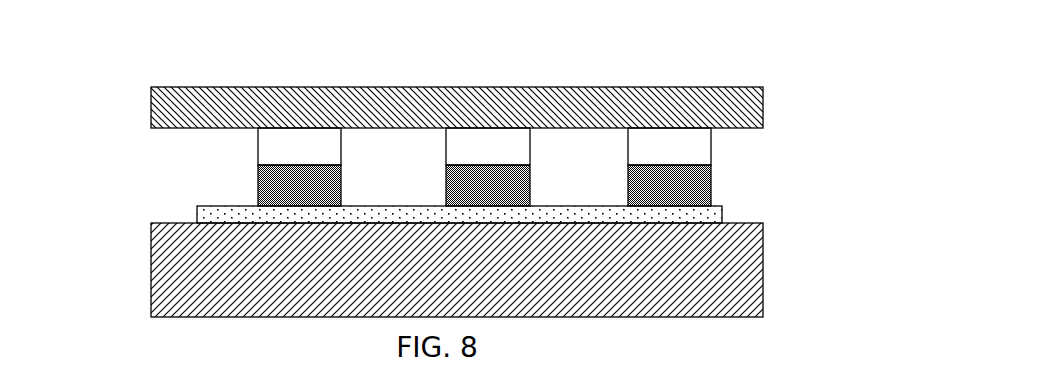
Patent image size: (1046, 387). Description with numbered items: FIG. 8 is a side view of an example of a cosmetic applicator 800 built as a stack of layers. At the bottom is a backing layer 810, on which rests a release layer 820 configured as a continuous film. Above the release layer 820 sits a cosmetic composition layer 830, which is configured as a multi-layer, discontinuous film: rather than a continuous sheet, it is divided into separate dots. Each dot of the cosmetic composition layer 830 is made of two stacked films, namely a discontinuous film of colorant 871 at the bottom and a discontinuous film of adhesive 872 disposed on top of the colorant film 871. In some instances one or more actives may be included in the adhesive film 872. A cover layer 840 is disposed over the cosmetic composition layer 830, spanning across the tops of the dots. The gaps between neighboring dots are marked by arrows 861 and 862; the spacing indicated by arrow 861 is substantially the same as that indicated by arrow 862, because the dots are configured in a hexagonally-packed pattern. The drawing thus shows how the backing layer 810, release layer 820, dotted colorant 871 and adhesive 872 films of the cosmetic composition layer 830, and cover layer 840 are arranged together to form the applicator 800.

The applicator 800 is at (108, 52).
The backing layer 810 is at (130, 223).
The release layer 820 is at (732, 213).
The cosmetic composition layer 830 is at (450, 167).
The cover layer 840 is at (763, 103).
The arrow 861 is at (350, 192).
The arrow 862 is at (539, 192).
The discontinuous film of colorant 871 is at (283, 198).
The discontinuous film of adhesive 872 is at (284, 153).